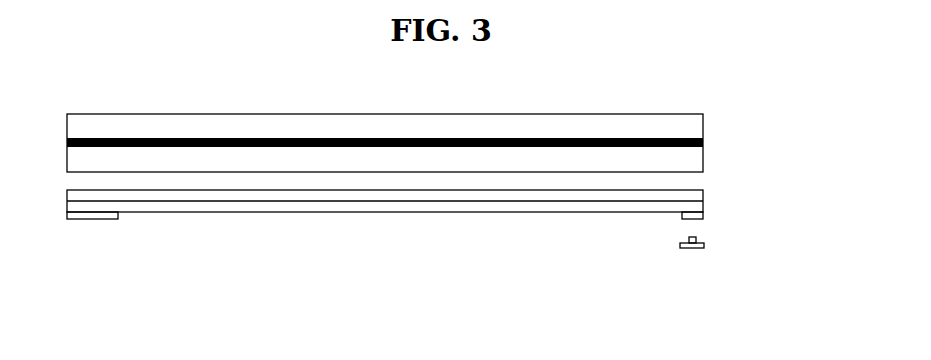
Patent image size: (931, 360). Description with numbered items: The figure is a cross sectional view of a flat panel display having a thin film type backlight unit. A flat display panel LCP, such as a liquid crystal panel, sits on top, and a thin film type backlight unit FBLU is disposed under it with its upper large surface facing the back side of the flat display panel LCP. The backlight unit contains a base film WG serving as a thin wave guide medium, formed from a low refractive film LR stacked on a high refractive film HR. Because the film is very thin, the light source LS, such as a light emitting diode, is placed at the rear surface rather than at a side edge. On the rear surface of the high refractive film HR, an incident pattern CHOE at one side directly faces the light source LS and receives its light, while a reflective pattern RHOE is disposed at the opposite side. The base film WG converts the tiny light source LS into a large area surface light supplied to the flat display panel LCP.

The flat display panel LCP is at (713, 138).
The thin film type backlight unit FBLU is at (713, 202).
The base film WG is at (385, 255).
The low refractive film LR is at (440, 192).
The high refractive film HR is at (482, 203).
The reflective pattern RHOE is at (94, 215).
The incident pattern CHOE is at (683, 214).
The light source LS is at (697, 238).